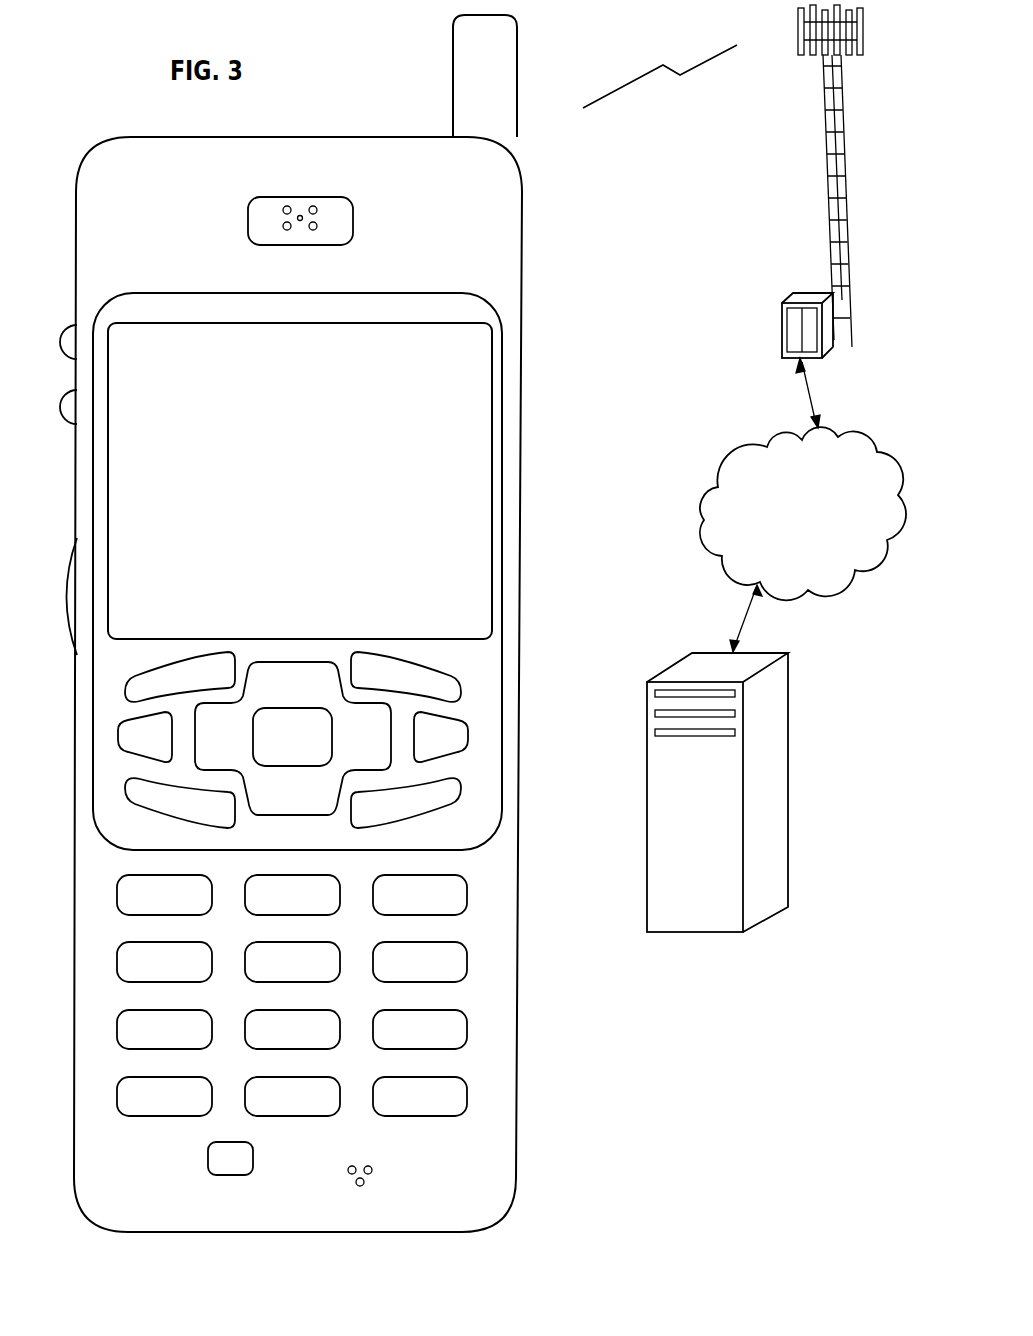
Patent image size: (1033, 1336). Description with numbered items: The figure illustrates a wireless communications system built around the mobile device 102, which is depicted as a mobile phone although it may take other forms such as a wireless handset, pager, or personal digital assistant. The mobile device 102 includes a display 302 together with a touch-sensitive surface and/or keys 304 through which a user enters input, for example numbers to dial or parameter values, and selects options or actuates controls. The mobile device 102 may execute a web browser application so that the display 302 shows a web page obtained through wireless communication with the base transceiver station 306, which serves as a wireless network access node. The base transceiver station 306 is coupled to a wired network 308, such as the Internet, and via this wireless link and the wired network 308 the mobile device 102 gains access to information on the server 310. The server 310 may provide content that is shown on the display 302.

The mobile device 102 is at (125, 1231).
The display 302 is at (484, 338).
The keys 304 is at (525, 1124).
The base transceiver station 306 is at (818, 198).
The wired network 308 is at (716, 560).
The server 310 is at (693, 933).